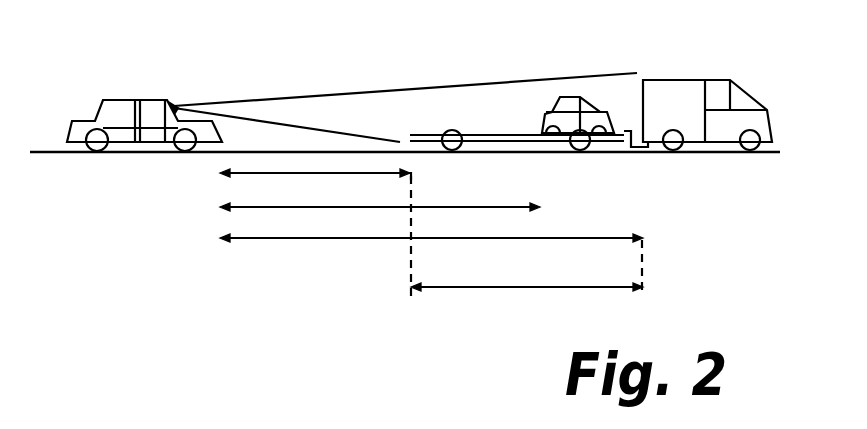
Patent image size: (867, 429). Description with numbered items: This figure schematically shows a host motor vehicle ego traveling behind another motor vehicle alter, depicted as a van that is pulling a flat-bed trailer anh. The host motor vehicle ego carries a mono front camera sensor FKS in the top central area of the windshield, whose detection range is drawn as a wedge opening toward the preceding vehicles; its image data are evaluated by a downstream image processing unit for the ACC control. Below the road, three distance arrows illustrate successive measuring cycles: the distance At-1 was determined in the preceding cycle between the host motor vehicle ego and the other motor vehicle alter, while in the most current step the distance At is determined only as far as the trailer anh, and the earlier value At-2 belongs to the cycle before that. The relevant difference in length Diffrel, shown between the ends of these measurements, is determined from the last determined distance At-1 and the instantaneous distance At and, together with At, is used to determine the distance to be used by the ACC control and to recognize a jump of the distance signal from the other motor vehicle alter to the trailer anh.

The host motor vehicle ego is at (150, 145).
The mono front camera sensor FKS is at (173, 105).
The trailer anh is at (518, 143).
The other motor vehicle alter is at (713, 143).
The instantaneously determined distance At is at (255, 173).
The distance determined two cycles earlier At-2 is at (302, 207).
The last determined distance At-1 is at (312, 238).
The relevant difference in length Diffrel is at (467, 287).